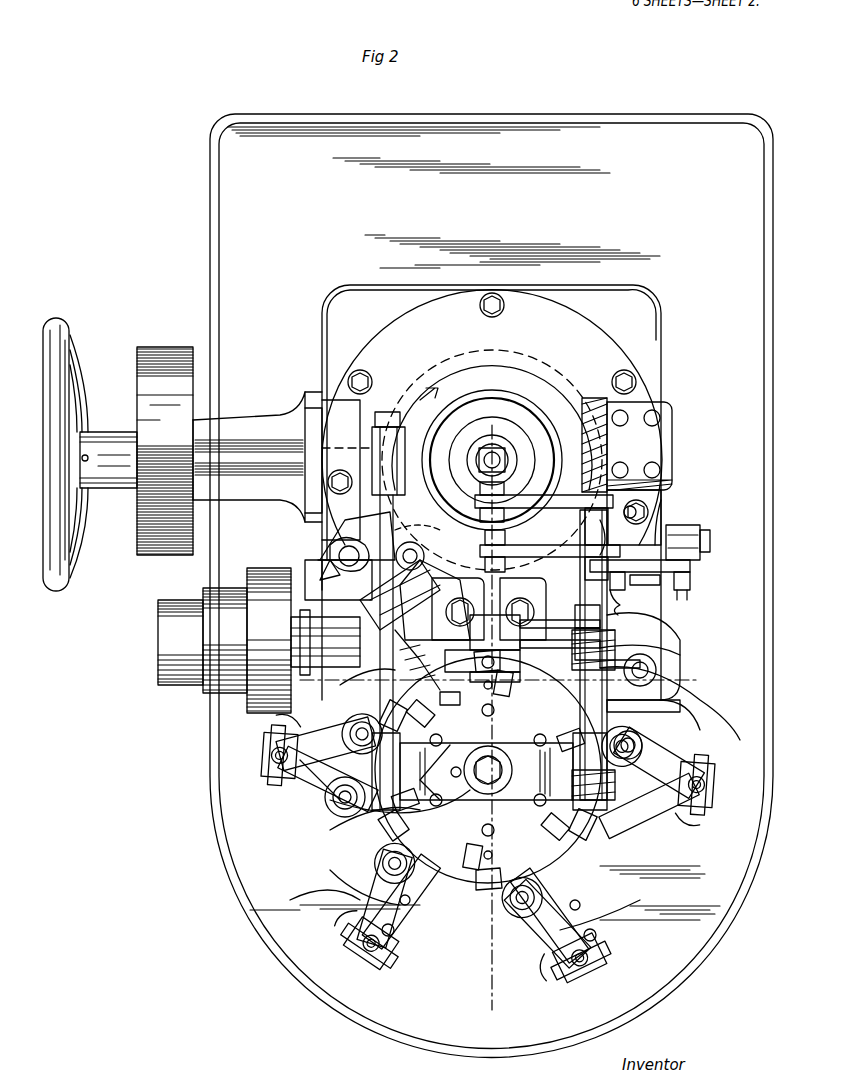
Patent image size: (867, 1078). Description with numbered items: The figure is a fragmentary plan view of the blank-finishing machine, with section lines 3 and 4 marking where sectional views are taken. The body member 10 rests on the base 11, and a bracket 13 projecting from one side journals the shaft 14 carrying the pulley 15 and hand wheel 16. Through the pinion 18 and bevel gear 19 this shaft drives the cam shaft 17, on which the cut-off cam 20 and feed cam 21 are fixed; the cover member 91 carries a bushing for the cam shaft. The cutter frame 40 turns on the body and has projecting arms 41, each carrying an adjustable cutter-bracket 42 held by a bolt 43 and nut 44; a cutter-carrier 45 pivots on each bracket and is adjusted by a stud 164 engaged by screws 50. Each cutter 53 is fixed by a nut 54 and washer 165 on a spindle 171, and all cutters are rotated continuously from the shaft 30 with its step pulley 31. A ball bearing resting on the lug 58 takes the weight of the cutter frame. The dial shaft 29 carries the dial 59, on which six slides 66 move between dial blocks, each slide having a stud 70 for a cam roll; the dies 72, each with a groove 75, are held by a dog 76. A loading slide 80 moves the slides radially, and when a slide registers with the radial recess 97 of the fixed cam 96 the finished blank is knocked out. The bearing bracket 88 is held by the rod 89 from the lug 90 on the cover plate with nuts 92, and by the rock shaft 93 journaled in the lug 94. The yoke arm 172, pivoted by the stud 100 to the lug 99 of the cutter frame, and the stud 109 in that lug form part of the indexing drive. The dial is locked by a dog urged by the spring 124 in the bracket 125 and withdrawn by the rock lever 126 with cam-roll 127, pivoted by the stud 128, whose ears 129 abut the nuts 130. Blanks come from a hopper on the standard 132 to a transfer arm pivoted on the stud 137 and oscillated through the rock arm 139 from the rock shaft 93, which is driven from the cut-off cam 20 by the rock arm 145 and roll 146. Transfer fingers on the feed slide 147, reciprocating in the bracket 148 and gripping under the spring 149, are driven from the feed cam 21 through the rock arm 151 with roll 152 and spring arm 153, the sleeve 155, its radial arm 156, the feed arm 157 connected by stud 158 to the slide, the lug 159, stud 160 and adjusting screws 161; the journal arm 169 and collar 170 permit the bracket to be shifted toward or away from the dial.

The section line 3- 3 is at (479, 712).
The section line 4- 4 is at (700, 650).
The body member 10 is at (675, 342).
The base 11 is at (210, 118).
The bracket 13 is at (248, 410).
The shaft 14 is at (228, 478).
The pulley 15 is at (135, 556).
The hand wheel 16 is at (60, 580).
The cam shaft 17 is at (515, 445).
The pinion 18 is at (372, 430).
The bevel gear 19 is at (452, 365).
The cut-off cam 20 is at (500, 420).
The feed cam 21 is at (465, 380).
The dial shaft 29 is at (360, 830).
The shaft 30 is at (296, 615).
The step pulley 31 is at (160, 684).
The cutter frame 40 is at (615, 640).
The projecting arms 41 is at (600, 930).
The cutter-bracket 42 is at (610, 905).
The bolt 43 is at (615, 872).
The nut 44 is at (630, 895).
The cutter-carrier 45 is at (575, 975).
The screws 50 is at (592, 965).
The cutter 53 is at (522, 912).
The nut 54 is at (487, 815).
The lug 58 is at (340, 688).
The dial 59 is at (680, 690).
The slides 66 is at (487, 770).
The stud 70 is at (488, 770).
The dies 72 is at (467, 770).
The groove 75 is at (590, 925).
The dog 76 is at (600, 945).
The slide 80 is at (660, 634).
The bearing bracket 88 is at (489, 770).
The rod 89 is at (330, 532).
The lug 90 is at (372, 452).
The cover member 91 is at (365, 340).
The nuts 92 is at (335, 820).
The rock shaft 93 is at (680, 672).
The lug 94 is at (590, 398).
The fixed cam 96 is at (460, 760).
The radial recess 97 is at (488, 746).
The lug 99 is at (700, 648).
The stud 100 is at (660, 640).
The stud 109 is at (680, 668).
The spring 124 is at (370, 672).
The bracket 125 is at (300, 578).
The rock lever 126 is at (310, 564).
The cam-roll 127 is at (420, 542).
The stud 128 is at (268, 548).
The ears 129 is at (182, 640).
The nuts 130 is at (428, 480).
The standard 132 is at (672, 470).
The stud 137 is at (560, 619).
The rock arm 139 is at (650, 738).
The rock arm 145 is at (660, 498).
The roll 146 is at (486, 504).
The slide 147 is at (478, 648).
The bracket 148 is at (432, 610).
The spring 149 is at (454, 697).
The rock arm 151 is at (694, 582).
The roll 152 is at (508, 545).
The spring arm 153 is at (700, 566).
The sleeve 155 is at (602, 645).
The radial arm 156 is at (702, 548).
The feed arm 157 is at (640, 580).
The stud 158 is at (458, 606).
The lug 159 is at (524, 606).
The stud 160 is at (620, 540).
The screws 161 is at (628, 592).
The stud 164 is at (575, 972).
The washer 165 is at (290, 900).
The journal arm 169 is at (560, 639).
The collar 170 is at (651, 664).
The spindle 171 is at (505, 930).
The yoke arm 172 is at (604, 632).